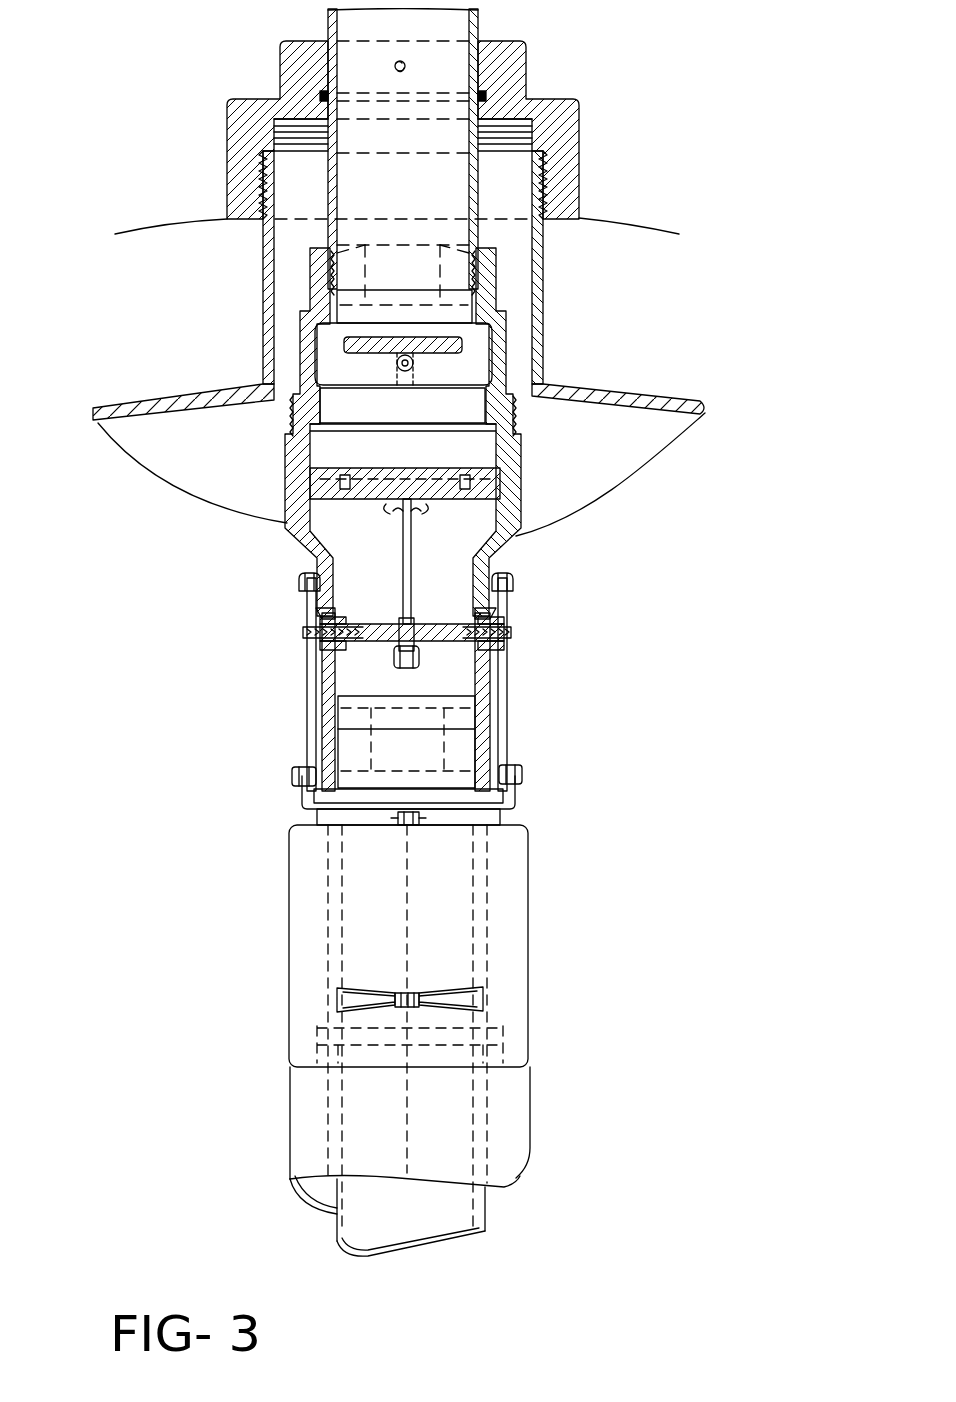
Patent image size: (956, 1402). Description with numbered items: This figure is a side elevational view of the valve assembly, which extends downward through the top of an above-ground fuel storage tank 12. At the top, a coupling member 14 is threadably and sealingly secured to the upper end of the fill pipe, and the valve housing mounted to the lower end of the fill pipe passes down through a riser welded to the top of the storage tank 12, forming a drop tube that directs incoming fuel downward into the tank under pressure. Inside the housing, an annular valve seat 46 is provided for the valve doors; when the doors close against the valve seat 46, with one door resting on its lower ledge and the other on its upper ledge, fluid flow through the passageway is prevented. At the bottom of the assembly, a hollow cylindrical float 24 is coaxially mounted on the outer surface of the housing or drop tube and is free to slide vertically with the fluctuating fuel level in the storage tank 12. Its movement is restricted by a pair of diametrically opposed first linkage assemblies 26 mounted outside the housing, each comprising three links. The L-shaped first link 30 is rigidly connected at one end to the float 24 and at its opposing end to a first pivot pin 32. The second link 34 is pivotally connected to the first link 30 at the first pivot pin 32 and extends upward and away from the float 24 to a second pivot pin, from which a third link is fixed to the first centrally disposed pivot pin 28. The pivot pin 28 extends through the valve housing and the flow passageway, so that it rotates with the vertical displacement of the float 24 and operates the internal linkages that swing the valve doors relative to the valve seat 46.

The storage tank 12 is at (639, 219).
The coupling member 14 is at (532, 158).
The float 24 is at (520, 962).
The first linkage assembly 26 is at (298, 659).
The first centrally disposed pivot pin 28 is at (421, 616).
The first link 30 is at (294, 801).
The first pivot pin 32 is at (291, 763).
The second link 34 is at (499, 668).
The valve seat 46 is at (305, 504).